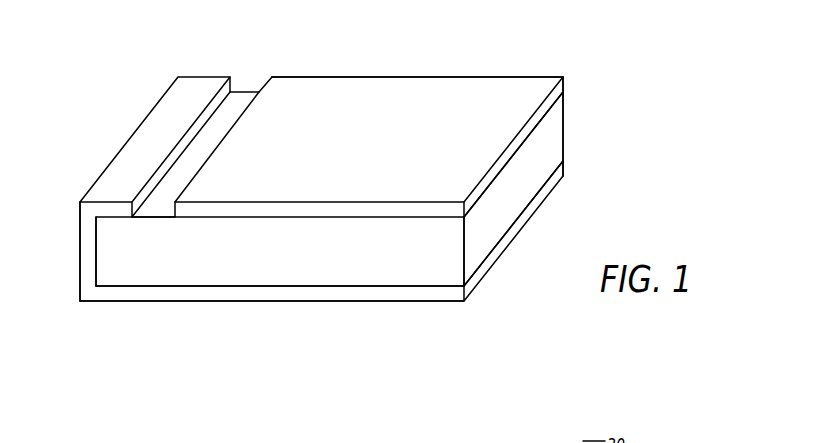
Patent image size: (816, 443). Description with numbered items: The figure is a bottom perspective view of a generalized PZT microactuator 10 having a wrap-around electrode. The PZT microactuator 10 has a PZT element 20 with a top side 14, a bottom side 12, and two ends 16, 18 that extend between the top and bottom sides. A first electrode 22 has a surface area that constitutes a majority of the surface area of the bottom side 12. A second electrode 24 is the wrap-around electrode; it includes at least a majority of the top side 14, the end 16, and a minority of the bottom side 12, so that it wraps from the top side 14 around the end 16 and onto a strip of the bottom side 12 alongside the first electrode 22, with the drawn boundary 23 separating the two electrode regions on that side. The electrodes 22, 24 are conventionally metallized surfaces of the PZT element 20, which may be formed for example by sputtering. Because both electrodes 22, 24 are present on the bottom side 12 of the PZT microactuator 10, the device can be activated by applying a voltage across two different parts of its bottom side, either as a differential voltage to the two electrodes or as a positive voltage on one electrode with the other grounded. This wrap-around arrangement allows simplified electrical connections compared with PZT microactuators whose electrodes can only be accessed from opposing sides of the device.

The PZT microactuator 10 is at (618, 76).
The bottom side 12 is at (477, 88).
The top side 14 is at (418, 300).
The end 16 is at (80, 260).
The end 18 is at (550, 137).
The PZT element 20 is at (298, 265).
The first electrode 22 is at (320, 77).
The groove 23 is at (250, 85).
The second electrode 24 is at (142, 148).